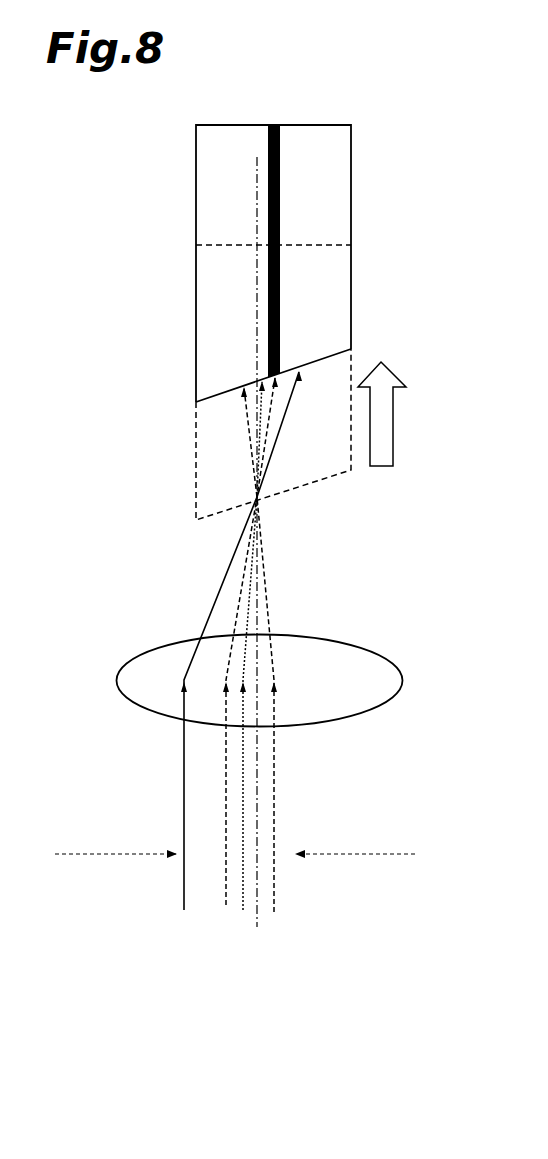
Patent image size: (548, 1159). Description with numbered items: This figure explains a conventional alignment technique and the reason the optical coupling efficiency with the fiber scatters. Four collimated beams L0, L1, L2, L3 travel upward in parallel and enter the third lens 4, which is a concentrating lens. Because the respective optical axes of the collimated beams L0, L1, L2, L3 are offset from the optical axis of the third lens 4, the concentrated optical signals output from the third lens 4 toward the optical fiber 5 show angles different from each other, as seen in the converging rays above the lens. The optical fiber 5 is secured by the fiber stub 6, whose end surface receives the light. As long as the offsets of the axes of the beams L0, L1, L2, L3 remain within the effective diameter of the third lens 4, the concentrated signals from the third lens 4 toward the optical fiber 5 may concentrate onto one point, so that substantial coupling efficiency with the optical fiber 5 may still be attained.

The third lens 4 is at (383, 680).
The optical fiber 5 is at (272, 378).
The fiber stub 6 is at (333, 277).
The collimated beam L0 is at (184, 908).
The collimated beam L1 is at (274, 900).
The collimated beam L2 is at (243, 906).
The collimated beam L3 is at (226, 902).